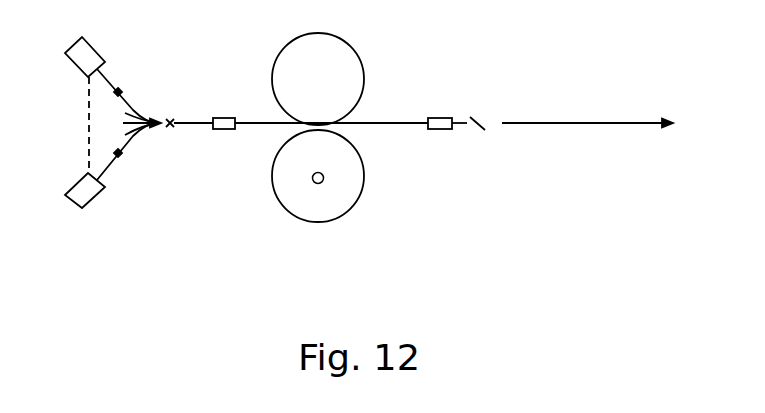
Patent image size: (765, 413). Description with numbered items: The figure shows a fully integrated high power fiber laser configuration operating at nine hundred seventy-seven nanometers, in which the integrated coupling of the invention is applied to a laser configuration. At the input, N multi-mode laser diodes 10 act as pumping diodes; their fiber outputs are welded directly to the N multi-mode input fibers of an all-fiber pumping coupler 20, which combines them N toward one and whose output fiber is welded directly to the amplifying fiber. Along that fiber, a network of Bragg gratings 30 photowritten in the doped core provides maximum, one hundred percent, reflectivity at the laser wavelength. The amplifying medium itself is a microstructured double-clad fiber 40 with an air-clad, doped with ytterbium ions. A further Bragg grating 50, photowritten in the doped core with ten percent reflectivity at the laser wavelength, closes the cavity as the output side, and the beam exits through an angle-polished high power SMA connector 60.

The multi-mode laser diodes 10 is at (93, 217).
The all-fiber pumping coupler 20 is at (150, 147).
The network of Bragg gratings 30 is at (224, 146).
The double-clad fiber 40 is at (318, 232).
The Bragg grating 50 is at (440, 147).
The angle-polished high power SMA connector 60 is at (477, 147).